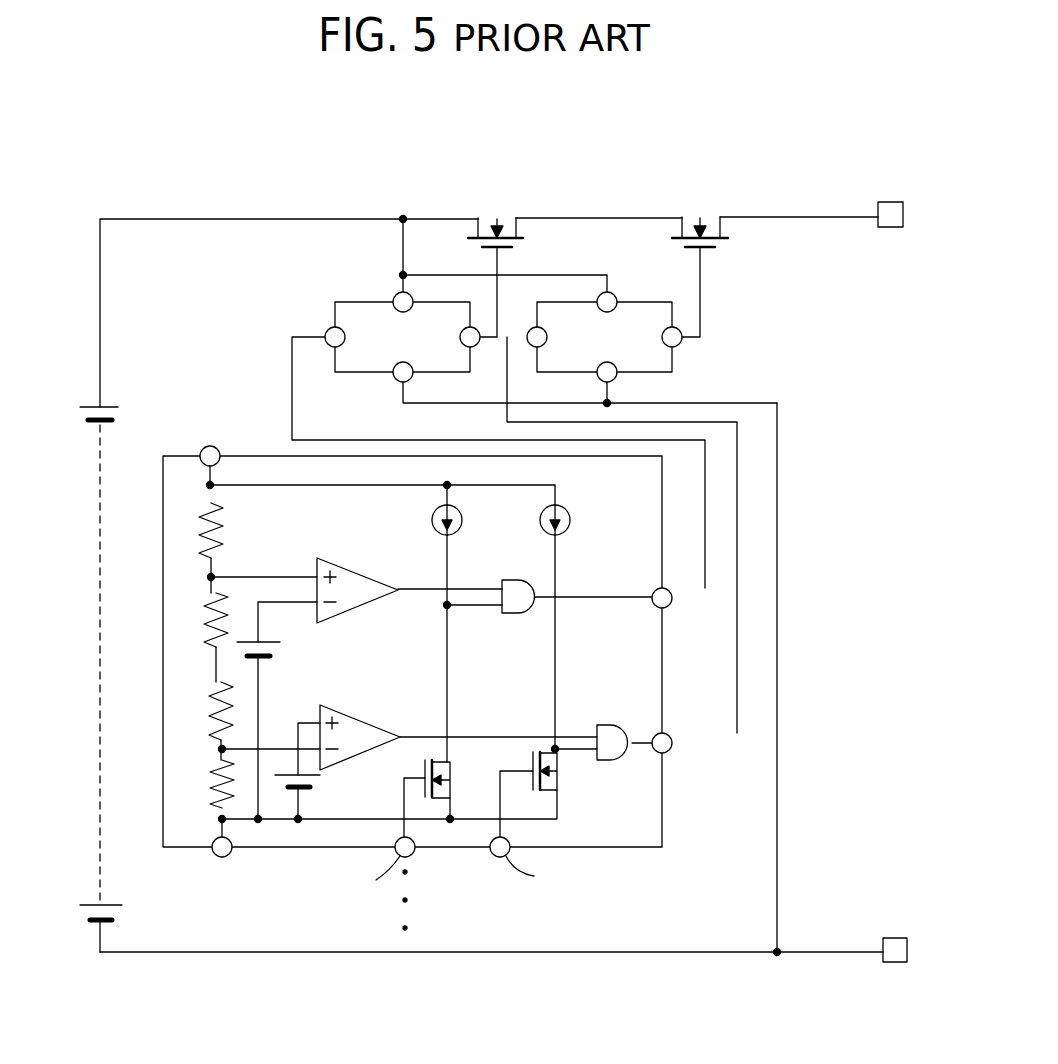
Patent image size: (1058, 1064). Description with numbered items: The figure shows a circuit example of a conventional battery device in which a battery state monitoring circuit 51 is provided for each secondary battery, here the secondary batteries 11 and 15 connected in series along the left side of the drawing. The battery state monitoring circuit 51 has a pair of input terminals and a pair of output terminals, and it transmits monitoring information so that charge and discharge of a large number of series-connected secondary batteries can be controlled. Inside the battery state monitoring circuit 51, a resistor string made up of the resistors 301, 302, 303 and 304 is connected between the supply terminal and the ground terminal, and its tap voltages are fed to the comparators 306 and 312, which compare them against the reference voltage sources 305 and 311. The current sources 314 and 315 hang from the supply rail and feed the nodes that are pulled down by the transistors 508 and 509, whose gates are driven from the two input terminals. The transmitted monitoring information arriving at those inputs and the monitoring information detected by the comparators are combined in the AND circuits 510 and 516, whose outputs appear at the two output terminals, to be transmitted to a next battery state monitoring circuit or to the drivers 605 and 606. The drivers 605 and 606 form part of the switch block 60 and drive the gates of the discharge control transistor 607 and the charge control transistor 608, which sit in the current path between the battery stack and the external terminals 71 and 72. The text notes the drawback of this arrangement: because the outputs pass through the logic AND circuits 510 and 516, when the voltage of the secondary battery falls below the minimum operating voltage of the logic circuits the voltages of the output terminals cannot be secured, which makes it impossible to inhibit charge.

The charge/discharge switch circuit 60 is at (572, 192).
The discharge control FET 607 is at (490, 215).
The charge control FET 608 is at (712, 206).
The driver 605 is at (330, 328).
The driver 606 is at (680, 348).
The external terminal 71 is at (892, 228).
The external terminal 72 is at (897, 963).
The secondary battery cell 11 is at (119, 411).
The secondary battery cell 15 is at (124, 912).
The battery protection IC 51 is at (426, 688).
The resistor 301 is at (222, 535).
The resistor 302 is at (208, 624).
The resistor 303 is at (213, 716).
The resistor 304 is at (212, 776).
The reference voltage source 305 is at (282, 648).
The reference voltage source 311 is at (322, 779).
The comparator 306 is at (358, 580).
The comparator 312 is at (370, 722).
The current source 314 is at (456, 530).
The current source 315 is at (570, 520).
The AND circuit 510 is at (514, 615).
The AND circuit 516 is at (612, 762).
The NMOS transistor 508 is at (446, 770).
The NMOS transistor 509 is at (556, 771).